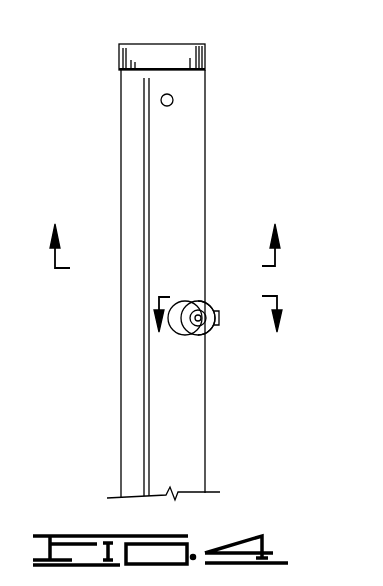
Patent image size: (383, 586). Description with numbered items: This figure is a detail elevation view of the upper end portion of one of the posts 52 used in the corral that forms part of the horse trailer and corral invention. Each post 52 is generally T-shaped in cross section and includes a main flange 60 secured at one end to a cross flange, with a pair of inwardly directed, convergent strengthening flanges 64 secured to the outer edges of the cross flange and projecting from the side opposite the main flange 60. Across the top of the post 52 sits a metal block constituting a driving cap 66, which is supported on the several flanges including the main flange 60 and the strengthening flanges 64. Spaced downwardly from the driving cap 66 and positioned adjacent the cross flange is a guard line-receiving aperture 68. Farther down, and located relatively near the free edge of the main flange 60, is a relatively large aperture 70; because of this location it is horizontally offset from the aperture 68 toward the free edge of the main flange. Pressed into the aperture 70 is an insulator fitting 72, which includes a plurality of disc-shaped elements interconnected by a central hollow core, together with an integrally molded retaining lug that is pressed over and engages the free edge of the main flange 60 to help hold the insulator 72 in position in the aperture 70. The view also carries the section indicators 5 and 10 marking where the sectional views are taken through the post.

The section line 5- 5 is at (163, 234).
The section line 10- 10 is at (218, 328).
The post 52 is at (207, 420).
The main flange 60 is at (189, 158).
The strengthening flange 64 is at (131, 392).
The driving cap 66 is at (179, 51).
The guard line-receiving aperture 68 is at (173, 99).
The aperture 70 is at (188, 301).
The insulator fitting 72 is at (213, 303).